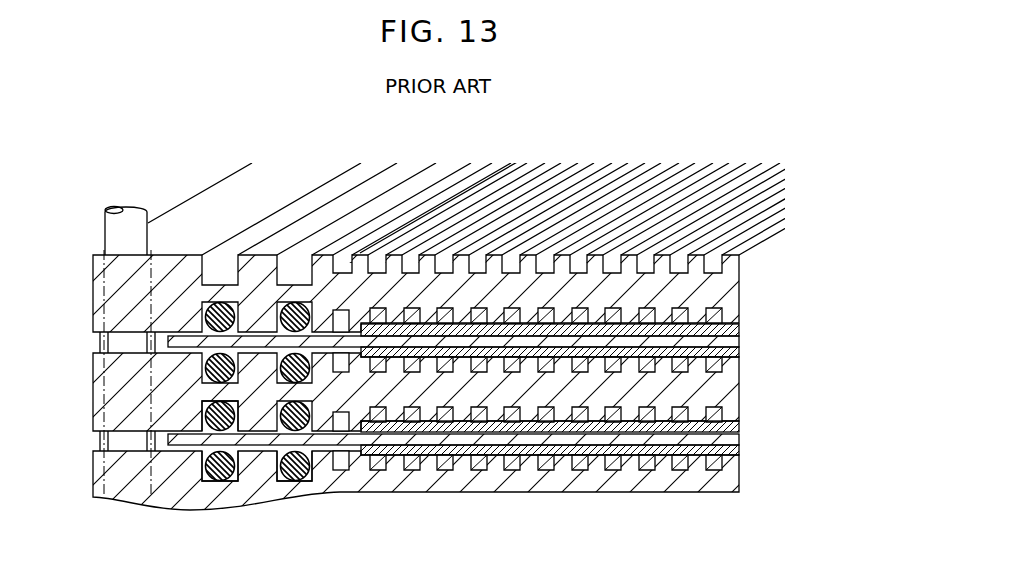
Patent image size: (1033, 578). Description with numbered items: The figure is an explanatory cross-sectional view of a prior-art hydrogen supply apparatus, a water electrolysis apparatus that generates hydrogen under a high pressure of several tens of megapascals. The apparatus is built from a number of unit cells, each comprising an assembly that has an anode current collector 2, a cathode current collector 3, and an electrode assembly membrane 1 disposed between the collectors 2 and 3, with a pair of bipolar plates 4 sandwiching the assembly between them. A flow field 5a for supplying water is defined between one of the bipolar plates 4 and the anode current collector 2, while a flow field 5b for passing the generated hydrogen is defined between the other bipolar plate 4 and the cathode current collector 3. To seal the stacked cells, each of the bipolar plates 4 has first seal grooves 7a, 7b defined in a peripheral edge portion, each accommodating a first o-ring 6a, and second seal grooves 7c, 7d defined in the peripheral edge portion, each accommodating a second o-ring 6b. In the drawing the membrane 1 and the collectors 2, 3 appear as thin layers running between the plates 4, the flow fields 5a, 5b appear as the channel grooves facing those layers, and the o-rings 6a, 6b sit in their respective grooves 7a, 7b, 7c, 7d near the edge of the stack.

The electrode assembly membrane 1 is at (728, 340).
The anode current collector 2 is at (727, 353).
The cathode current collector 3 is at (728, 328).
The bipolar plate 4 is at (100, 306).
The flow field 5a is at (645, 414).
The flow field 5b is at (645, 364).
The first o-ring 6a is at (212, 430).
The second o-ring 6b is at (285, 472).
The first seal groove 7a is at (243, 483).
The first seal groove 7b is at (203, 403).
The second seal groove 7c is at (297, 487).
The second seal groove 7d is at (334, 462).